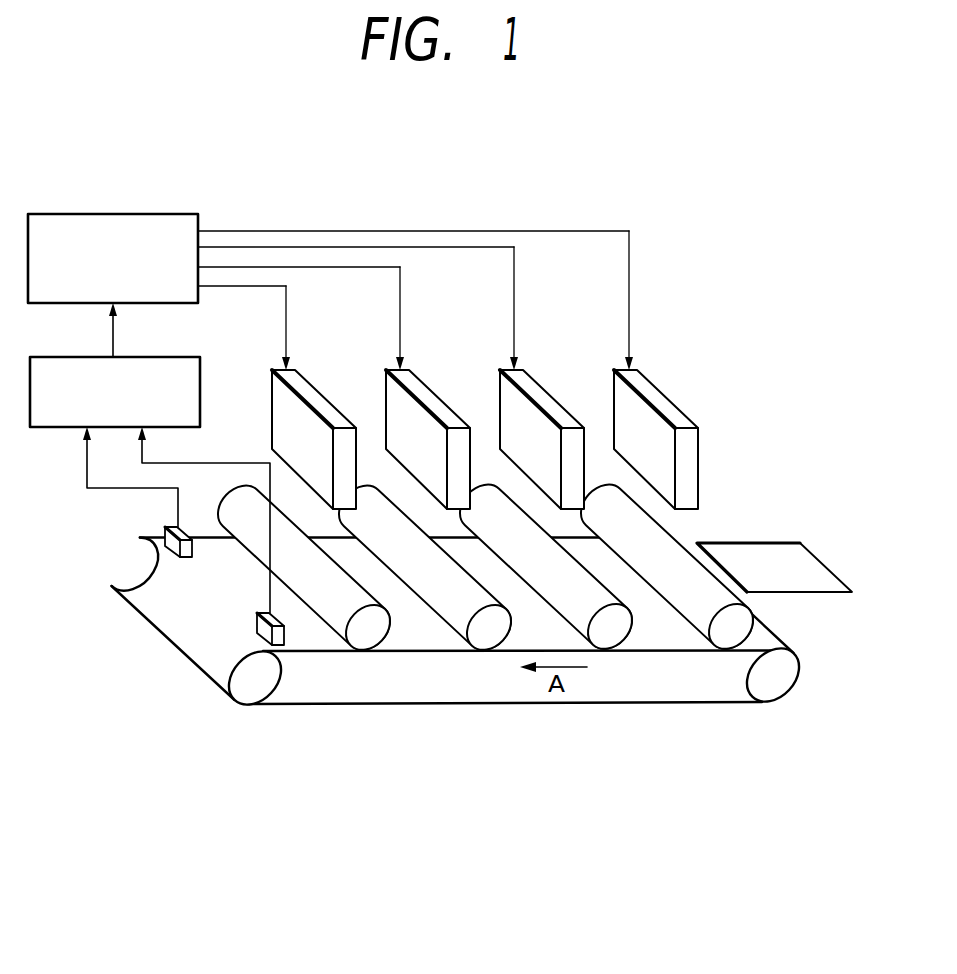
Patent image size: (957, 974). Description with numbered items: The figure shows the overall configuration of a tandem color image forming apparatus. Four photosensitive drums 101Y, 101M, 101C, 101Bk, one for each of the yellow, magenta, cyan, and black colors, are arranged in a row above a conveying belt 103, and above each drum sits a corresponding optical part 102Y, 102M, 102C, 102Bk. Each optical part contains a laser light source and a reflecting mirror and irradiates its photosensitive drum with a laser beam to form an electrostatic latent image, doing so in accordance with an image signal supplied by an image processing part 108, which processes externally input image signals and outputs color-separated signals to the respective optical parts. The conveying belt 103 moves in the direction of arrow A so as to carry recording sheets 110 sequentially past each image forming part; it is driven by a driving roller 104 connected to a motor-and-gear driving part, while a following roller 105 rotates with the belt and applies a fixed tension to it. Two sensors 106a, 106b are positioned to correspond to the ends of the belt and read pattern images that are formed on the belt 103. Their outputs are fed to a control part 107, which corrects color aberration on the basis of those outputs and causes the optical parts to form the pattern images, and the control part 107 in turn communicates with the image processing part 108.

The photosensitive drum 101Bk is at (371, 634).
The photosensitive drum 101C is at (493, 634).
The photosensitive drum 101M is at (617, 634).
The photosensitive drum 101Y is at (735, 633).
The optical part 102Bk is at (317, 385).
The optical part 102C is at (429, 385).
The optical part 102M is at (543, 385).
The optical part 102Y is at (657, 385).
The conveying belt 103 is at (308, 638).
The driving roller 104 is at (263, 687).
The following roller 105 is at (778, 681).
The sensor 106a is at (264, 638).
The sensor 106b is at (168, 548).
The control part 107 is at (150, 354).
The image processing part 108 is at (150, 213).
The recording sheet 110 is at (763, 542).